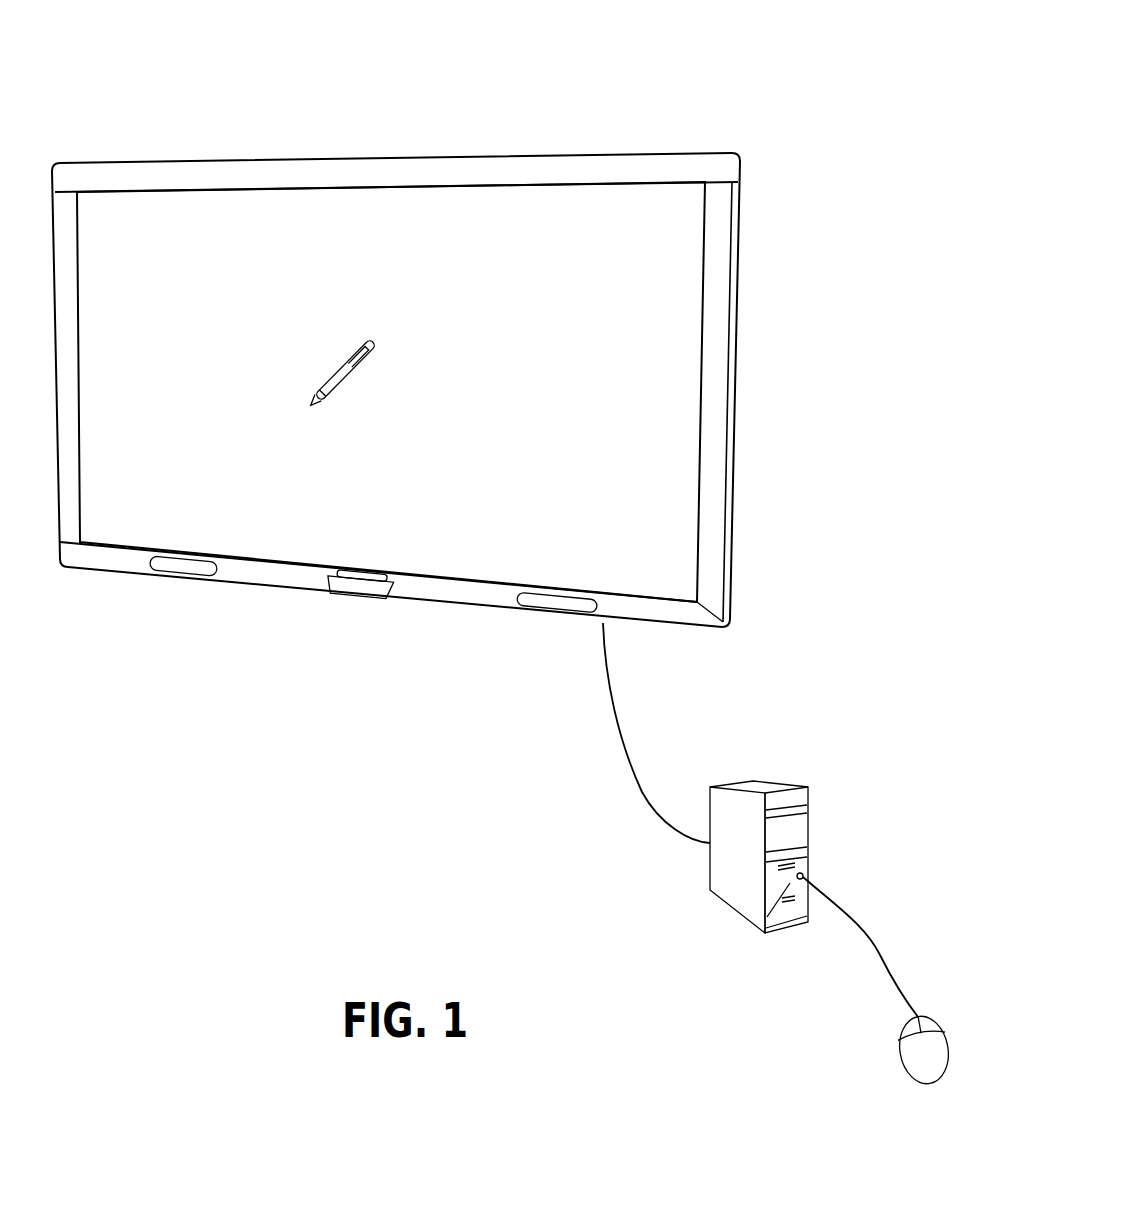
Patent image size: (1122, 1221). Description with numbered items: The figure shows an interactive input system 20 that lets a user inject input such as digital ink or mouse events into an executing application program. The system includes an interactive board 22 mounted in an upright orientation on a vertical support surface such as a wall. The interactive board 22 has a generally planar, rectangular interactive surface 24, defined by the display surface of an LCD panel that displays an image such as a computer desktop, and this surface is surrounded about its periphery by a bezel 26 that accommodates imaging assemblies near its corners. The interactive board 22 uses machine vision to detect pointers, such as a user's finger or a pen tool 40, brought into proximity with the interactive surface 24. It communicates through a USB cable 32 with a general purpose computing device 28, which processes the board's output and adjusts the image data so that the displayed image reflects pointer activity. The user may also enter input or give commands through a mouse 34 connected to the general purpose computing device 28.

The interactive input system 20 is at (762, 116).
The interactive board 22 is at (440, 390).
The interactive surface 24 is at (651, 410).
The bezel 26 is at (708, 498).
The general purpose computing device 28 is at (738, 905).
The universal serial bus (USB) cable 32 is at (642, 792).
The mouse 34 is at (907, 1050).
The pen tool 40 is at (358, 357).